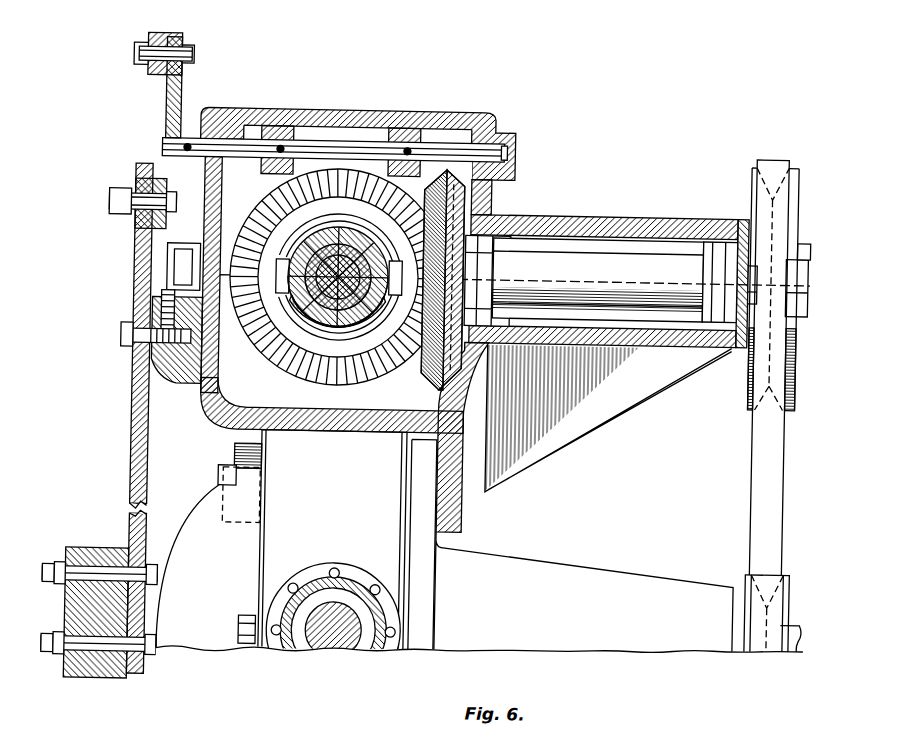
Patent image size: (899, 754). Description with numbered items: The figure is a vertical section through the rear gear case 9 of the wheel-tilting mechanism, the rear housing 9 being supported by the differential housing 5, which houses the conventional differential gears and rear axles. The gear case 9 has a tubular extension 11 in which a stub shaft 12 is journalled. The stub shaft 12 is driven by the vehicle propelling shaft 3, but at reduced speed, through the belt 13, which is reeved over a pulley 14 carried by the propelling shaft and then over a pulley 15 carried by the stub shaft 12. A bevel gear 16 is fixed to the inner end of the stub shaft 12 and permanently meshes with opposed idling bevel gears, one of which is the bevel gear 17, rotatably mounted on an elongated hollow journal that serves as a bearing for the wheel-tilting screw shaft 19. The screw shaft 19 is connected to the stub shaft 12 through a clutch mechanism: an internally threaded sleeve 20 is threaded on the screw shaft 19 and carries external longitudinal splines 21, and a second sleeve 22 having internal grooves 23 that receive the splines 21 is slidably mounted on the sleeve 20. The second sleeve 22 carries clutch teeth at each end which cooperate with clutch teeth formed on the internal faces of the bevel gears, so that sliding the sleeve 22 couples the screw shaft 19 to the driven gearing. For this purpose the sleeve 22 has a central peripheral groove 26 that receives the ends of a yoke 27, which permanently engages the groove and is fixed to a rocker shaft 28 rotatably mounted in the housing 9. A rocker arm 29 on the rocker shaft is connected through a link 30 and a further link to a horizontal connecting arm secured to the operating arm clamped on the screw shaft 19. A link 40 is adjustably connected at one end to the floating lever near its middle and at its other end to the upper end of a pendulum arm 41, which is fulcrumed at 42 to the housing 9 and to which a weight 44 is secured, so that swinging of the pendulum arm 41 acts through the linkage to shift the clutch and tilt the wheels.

The vehicle propelling shaft 3 is at (804, 652).
The differential housing 5 is at (333, 630).
The rear gear case 9 is at (472, 110).
The tubular extension 11 is at (576, 220).
The stub shaft 12 is at (607, 262).
The belt 13 is at (767, 152).
The pulley 14 is at (752, 572).
The pulley 15 is at (750, 173).
The bevel gear 16 is at (433, 384).
The idling bevel gear 17 is at (292, 370).
The screw shaft 19 is at (364, 325).
The internally threaded sleeve 20 is at (346, 328).
The external longitudinal splines 21 is at (323, 330).
The second sleeve 22 is at (302, 306).
The internal grooves 23 is at (316, 312).
The central peripheral groove 26 is at (333, 226).
The yoke 27 is at (283, 216).
The rocker shaft 28 is at (337, 141).
The rocker arm 29 is at (163, 102).
The link 30 is at (168, 38).
The link 40 is at (160, 197).
The pendulum arm 41 is at (134, 273).
The fulcrum 42 is at (126, 341).
The weight 44 is at (112, 552).